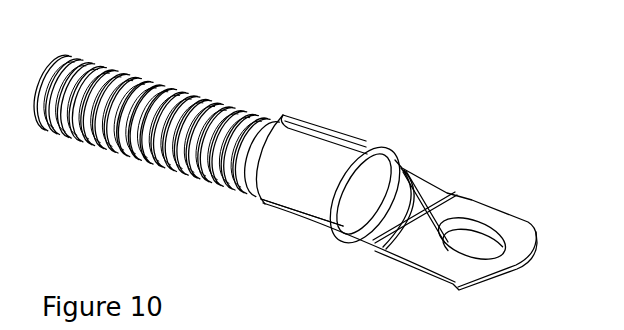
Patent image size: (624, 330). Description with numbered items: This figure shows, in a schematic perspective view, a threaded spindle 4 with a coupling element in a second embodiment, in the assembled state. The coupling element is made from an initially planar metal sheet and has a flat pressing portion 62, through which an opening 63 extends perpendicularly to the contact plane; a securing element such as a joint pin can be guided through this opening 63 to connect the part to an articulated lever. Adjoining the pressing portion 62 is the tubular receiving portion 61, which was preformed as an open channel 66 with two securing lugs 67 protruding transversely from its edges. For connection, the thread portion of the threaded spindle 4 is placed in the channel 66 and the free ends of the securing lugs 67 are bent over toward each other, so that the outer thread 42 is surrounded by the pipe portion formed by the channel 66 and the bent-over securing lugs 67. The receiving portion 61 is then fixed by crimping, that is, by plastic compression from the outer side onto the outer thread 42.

The threaded spindle 4 is at (161, 200).
The outer thread 42 is at (203, 103).
The receiving portion 61 is at (293, 213).
The pressing portion 62 is at (460, 212).
The opening 63 is at (477, 240).
The channel 66 is at (315, 232).
The securing lugs 67 is at (343, 134).